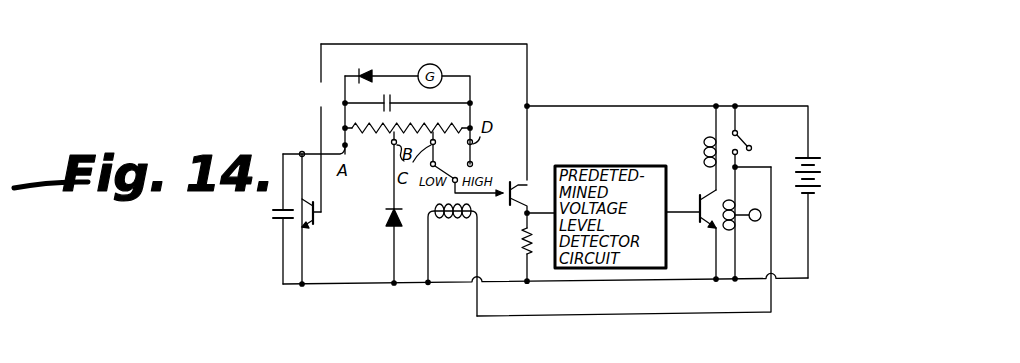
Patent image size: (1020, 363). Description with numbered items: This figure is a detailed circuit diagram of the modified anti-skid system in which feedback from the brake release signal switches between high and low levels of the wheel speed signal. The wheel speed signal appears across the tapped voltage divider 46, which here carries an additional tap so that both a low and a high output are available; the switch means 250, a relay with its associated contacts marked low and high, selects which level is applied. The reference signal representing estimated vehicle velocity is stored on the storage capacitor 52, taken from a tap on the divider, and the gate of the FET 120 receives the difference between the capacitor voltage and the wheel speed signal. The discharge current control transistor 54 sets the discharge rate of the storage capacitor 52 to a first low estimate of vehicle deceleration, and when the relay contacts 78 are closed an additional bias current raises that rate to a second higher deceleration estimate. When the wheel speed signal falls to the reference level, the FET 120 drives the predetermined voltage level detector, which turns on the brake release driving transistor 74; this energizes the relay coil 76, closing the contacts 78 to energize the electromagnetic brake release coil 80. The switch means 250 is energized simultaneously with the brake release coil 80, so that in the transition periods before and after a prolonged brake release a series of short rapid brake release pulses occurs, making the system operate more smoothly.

The voltage divider 46 is at (348, 149).
The storage capacitor 52 is at (277, 216).
The discharge current control transistor 54 is at (317, 226).
The FET 120 is at (505, 182).
The switching means 250 is at (485, 205).
The brake release driving transistor 74 is at (699, 207).
The relay coil 76 is at (703, 146).
The relay contacts 78 is at (746, 135).
The brake release coil 80 is at (752, 205).